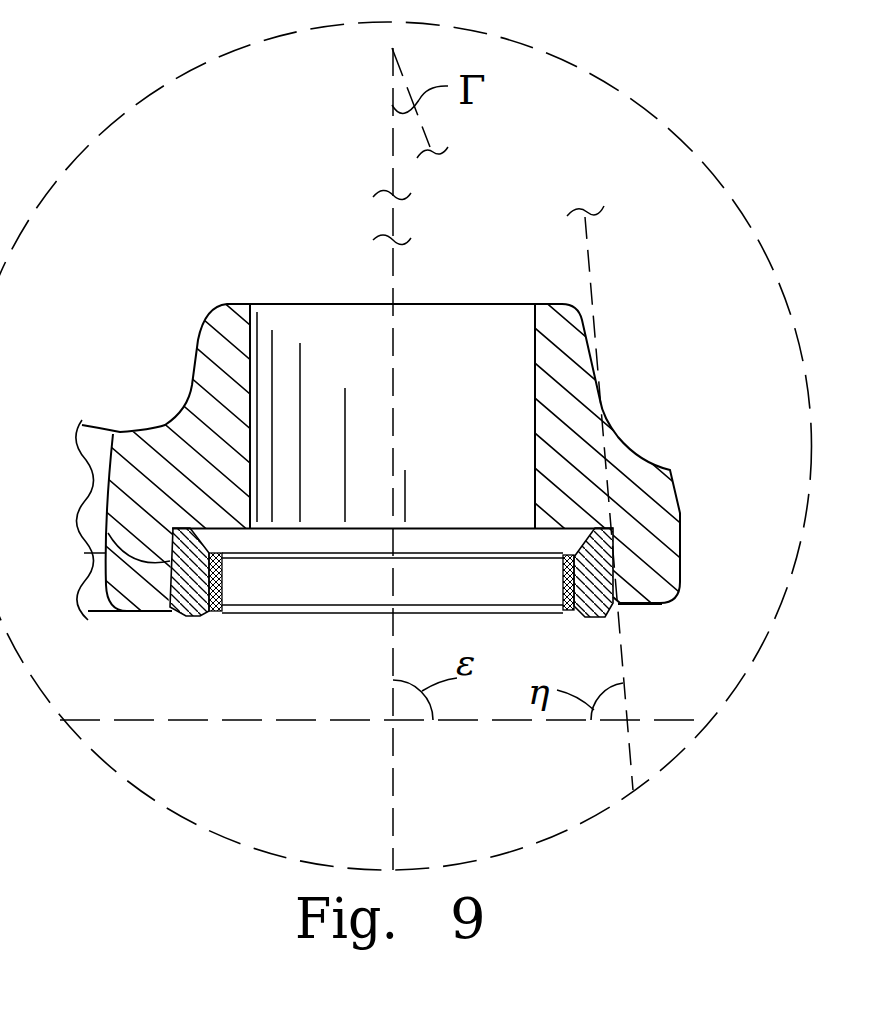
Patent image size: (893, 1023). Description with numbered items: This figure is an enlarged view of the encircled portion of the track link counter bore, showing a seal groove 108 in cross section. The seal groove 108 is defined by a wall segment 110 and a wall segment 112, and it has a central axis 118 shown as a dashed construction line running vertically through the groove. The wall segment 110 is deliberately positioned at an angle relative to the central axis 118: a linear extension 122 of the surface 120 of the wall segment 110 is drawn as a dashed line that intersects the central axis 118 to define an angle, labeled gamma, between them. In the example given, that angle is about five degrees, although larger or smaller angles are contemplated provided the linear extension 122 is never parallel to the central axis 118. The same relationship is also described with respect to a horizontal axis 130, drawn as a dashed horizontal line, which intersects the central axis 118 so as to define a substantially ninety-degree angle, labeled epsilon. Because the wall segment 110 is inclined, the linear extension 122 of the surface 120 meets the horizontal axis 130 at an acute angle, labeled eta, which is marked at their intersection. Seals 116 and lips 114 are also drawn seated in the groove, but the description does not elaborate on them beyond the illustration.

The seal groove 108 is at (107, 532).
The wall segment 110 is at (610, 563).
The wall segment 112 is at (568, 530).
The retaining lip 114 is at (190, 618).
The seal 116 is at (188, 568).
The central axis 118 is at (400, 290).
The surface 120 is at (614, 603).
The linear extension 122 is at (593, 268).
The horizontal axis 130 is at (650, 717).